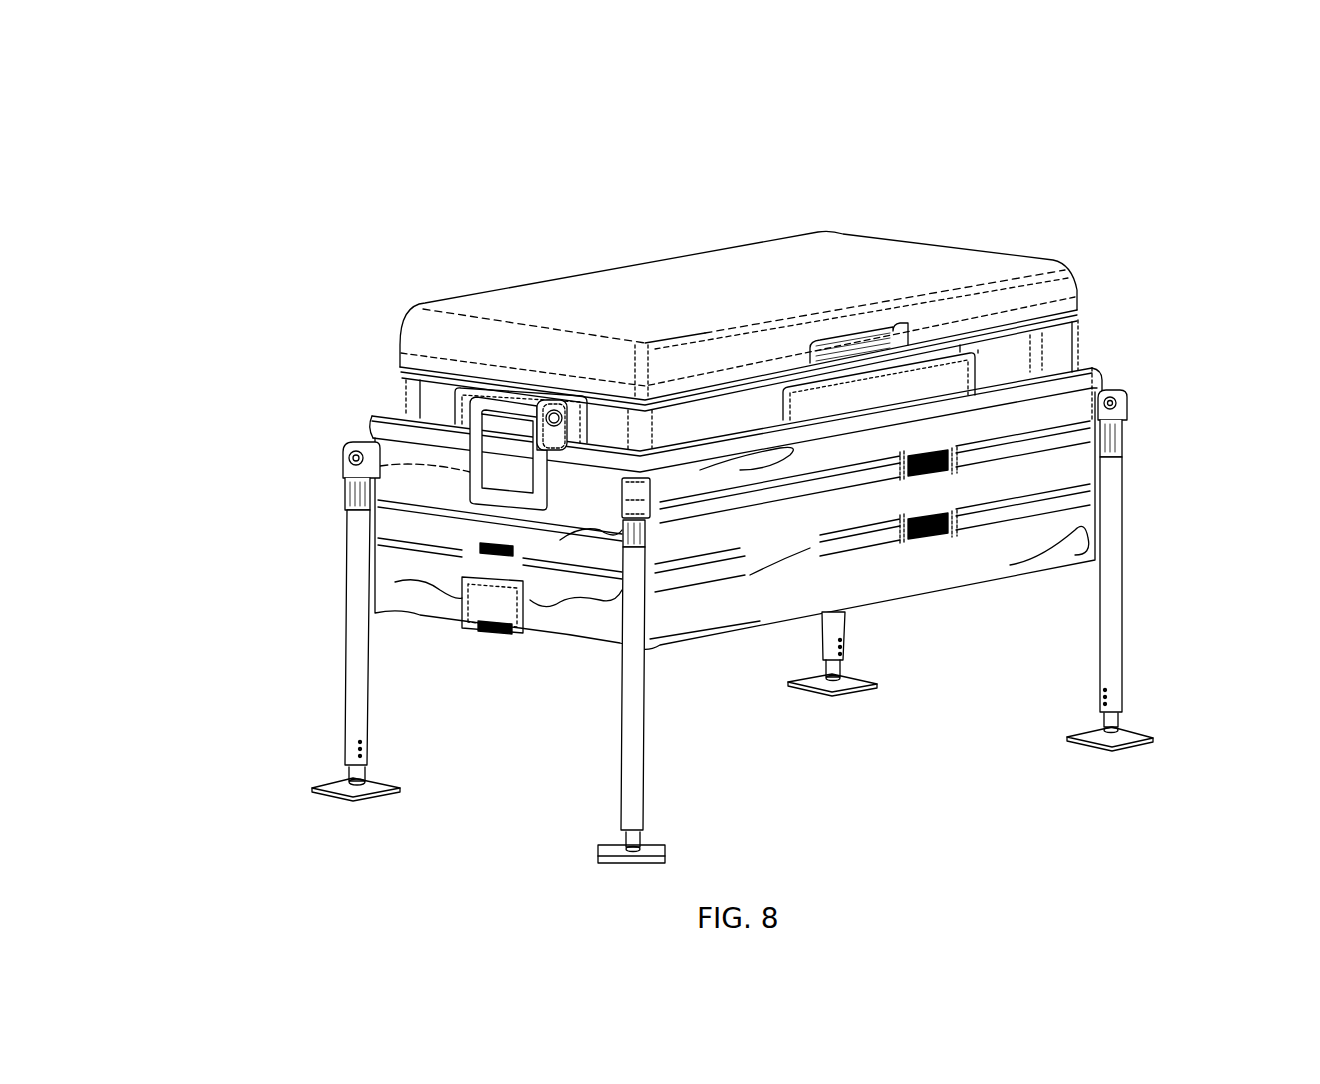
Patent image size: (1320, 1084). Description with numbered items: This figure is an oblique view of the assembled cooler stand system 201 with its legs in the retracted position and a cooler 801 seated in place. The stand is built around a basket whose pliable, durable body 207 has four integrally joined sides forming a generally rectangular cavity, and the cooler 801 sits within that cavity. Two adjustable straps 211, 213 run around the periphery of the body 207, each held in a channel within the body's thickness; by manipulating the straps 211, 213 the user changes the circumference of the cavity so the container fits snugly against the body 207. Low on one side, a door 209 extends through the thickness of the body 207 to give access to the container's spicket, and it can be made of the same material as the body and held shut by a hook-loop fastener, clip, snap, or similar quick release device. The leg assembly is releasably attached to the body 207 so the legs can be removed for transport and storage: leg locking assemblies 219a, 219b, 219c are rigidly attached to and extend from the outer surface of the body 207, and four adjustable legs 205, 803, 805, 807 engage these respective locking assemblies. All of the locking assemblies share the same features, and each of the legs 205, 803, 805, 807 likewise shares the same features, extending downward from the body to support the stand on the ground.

The system 201 is at (230, 140).
The cooler 801 is at (993, 251).
The body 207 is at (905, 596).
The adjustable strap 213 is at (932, 455).
The adjustable strap 211 is at (927, 518).
The door 209 is at (480, 630).
The leg locking assembly 219a is at (325, 432).
The leg locking assembly 219b is at (668, 501).
The leg locking assembly 219c is at (1140, 402).
The adjustable leg 205 is at (322, 627).
The adjustable leg 803 is at (582, 803).
The adjustable leg 805 is at (800, 655).
The adjustable leg 807 is at (1140, 625).